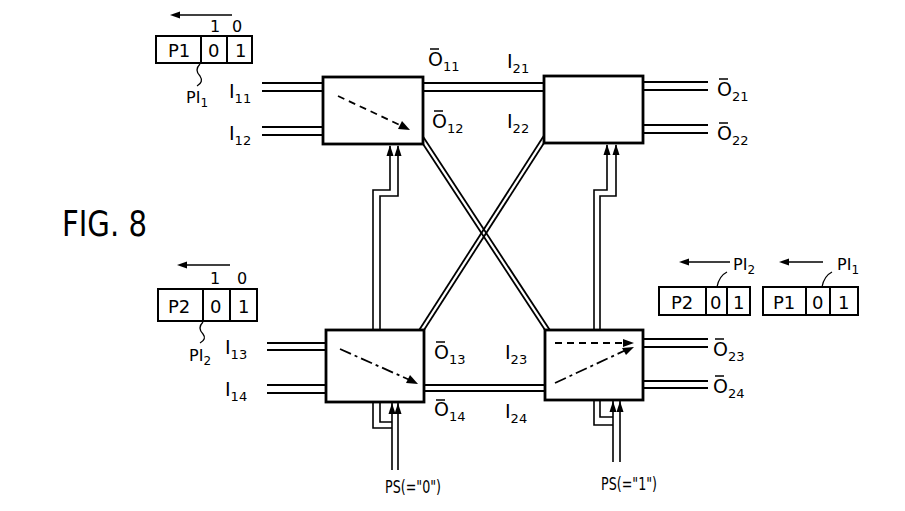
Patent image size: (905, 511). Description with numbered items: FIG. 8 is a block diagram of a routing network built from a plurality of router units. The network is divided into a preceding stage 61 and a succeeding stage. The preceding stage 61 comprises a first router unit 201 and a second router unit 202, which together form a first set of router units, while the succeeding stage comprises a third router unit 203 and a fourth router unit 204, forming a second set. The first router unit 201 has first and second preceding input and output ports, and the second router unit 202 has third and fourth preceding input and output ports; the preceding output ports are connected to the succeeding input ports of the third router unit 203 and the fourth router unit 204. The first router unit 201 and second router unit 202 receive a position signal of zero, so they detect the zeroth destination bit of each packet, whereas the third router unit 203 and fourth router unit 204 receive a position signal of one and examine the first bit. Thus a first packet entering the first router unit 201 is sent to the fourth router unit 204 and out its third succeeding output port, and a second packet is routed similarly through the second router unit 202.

The preceding stage 61 is at (330, 212).
The first router unit 201 is at (377, 77).
The second router unit 202 is at (402, 328).
The third router unit 203 is at (592, 74).
The fourth router unit 204 is at (564, 324).